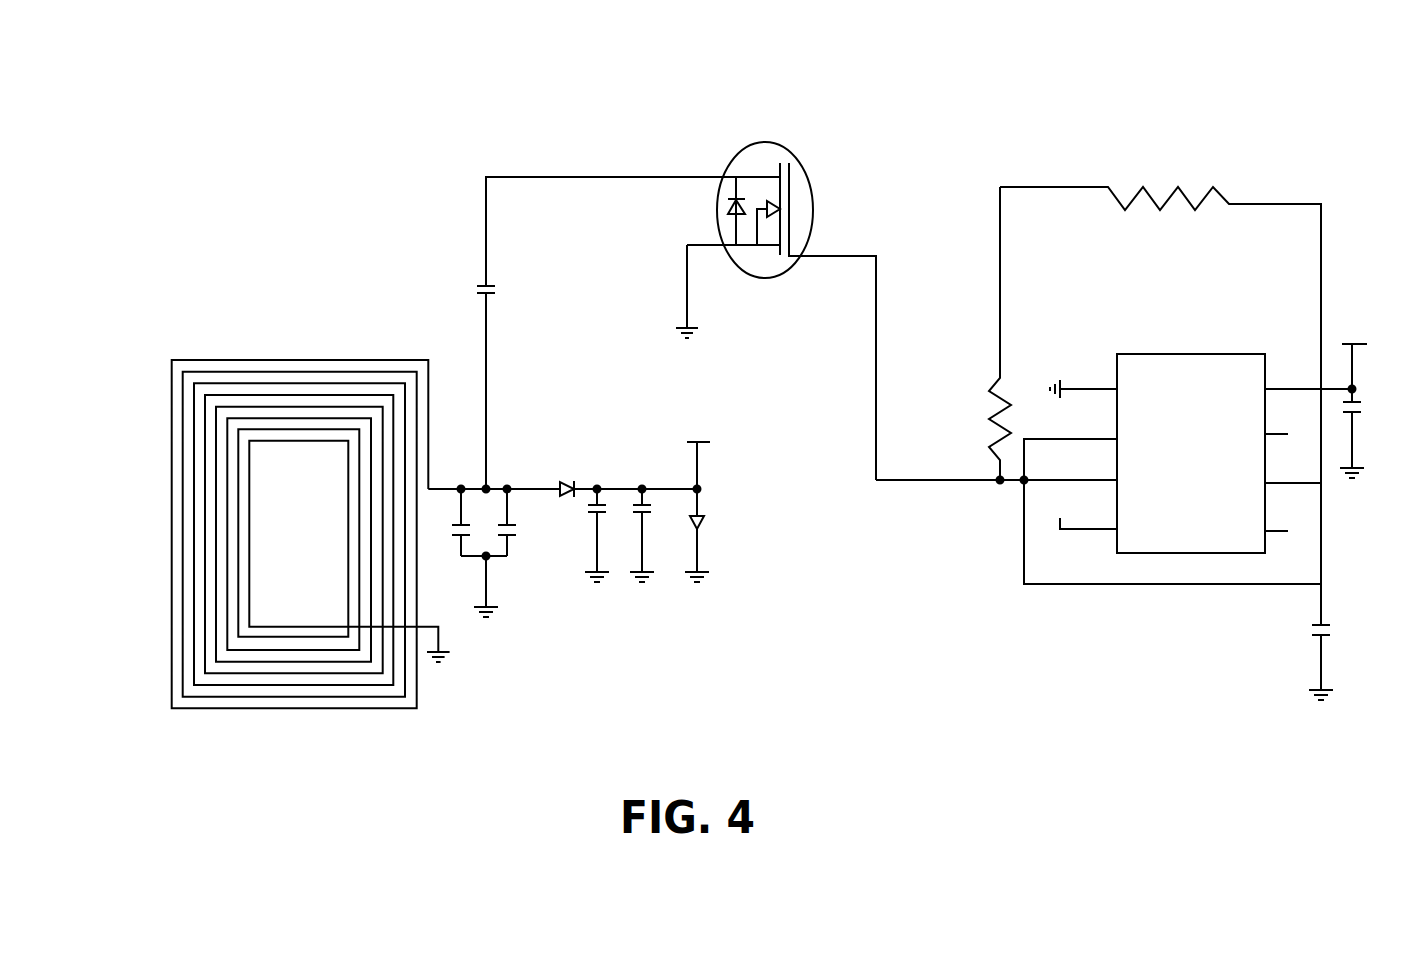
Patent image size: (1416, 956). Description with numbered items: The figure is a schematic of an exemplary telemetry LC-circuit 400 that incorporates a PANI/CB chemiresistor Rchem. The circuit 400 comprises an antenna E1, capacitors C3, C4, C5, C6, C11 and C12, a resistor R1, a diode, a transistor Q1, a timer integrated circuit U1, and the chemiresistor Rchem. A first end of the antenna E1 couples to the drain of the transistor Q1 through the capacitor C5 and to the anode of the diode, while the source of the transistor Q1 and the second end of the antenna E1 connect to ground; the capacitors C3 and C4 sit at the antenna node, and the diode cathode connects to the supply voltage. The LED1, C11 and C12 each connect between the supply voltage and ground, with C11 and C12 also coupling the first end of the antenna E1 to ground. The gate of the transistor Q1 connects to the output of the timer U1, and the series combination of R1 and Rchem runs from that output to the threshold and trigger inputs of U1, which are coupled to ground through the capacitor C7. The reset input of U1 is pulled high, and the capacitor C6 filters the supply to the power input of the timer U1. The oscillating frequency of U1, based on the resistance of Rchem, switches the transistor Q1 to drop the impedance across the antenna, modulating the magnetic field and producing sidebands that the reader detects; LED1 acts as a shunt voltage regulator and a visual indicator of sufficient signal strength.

The telemetry LC-circuit 400 is at (250, 96).
The antenna E1 is at (284, 509).
The transistor Q1 is at (771, 285).
The capacitor C3 is at (474, 522).
The capacitor C4 is at (519, 522).
The capacitor C5 is at (628, 333).
The capacitor C11 is at (611, 535).
The capacitor C12 is at (657, 535).
The LED LED1 is at (723, 535).
The resistor R1 is at (974, 333).
The PANI/CB chemiresistor Rchem is at (1160, 360).
The timer integrated circuit U1 is at (1188, 443).
The capacitor C6 is at (1367, 433).
The capacitor C7 is at (1336, 642).